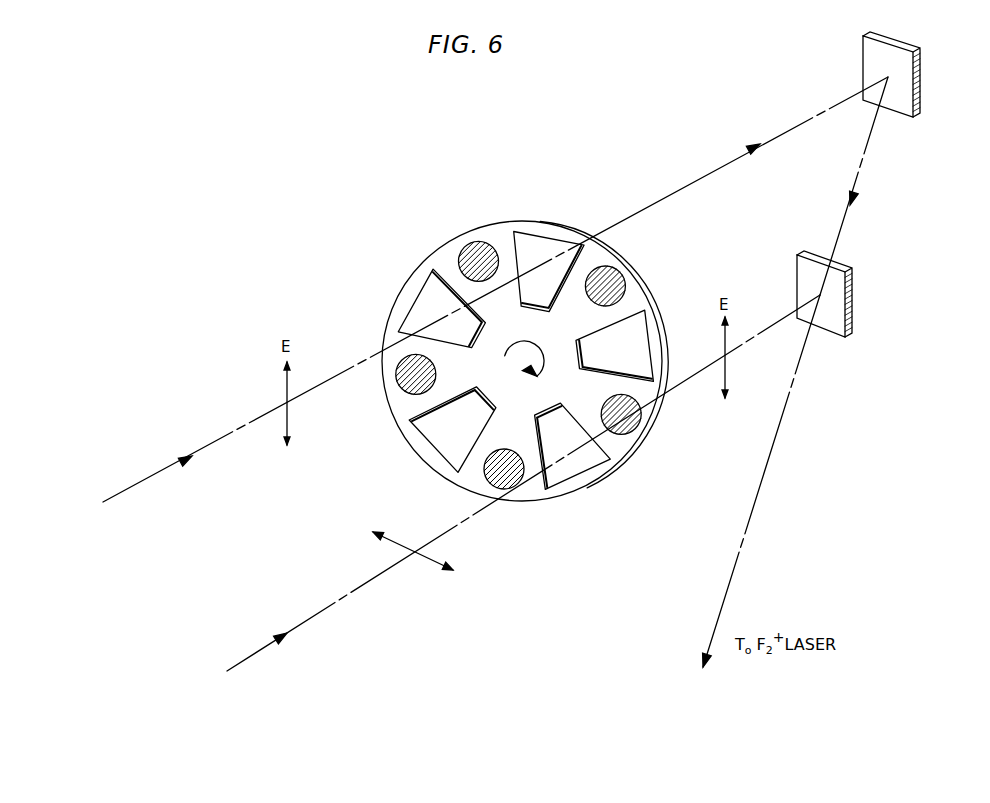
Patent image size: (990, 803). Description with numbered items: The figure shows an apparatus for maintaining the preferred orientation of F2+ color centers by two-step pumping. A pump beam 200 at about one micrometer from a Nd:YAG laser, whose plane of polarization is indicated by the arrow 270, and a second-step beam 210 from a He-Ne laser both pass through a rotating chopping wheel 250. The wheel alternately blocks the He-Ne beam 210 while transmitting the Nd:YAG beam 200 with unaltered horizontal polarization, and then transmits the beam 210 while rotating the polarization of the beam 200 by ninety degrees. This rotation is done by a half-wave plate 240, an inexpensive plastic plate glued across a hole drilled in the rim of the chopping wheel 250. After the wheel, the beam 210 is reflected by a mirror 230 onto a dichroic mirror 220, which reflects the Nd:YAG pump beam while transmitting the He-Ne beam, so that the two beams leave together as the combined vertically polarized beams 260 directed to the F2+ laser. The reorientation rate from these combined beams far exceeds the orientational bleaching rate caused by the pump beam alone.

The beam 200 is at (353, 590).
The beam 210 is at (205, 452).
The mirror 220 is at (852, 295).
The mirror 230 is at (920, 75).
The half-wave plate 240 is at (618, 420).
The chopping wheel 250 is at (538, 346).
The combined vertically polarized beams 260 is at (757, 493).
The arrow 270 is at (433, 565).